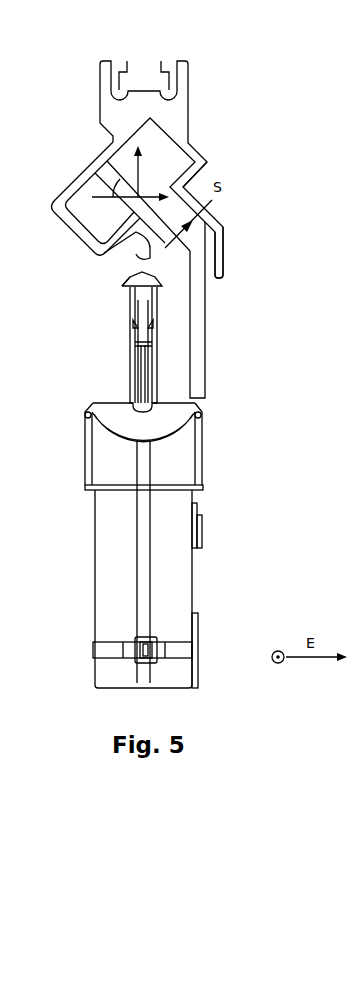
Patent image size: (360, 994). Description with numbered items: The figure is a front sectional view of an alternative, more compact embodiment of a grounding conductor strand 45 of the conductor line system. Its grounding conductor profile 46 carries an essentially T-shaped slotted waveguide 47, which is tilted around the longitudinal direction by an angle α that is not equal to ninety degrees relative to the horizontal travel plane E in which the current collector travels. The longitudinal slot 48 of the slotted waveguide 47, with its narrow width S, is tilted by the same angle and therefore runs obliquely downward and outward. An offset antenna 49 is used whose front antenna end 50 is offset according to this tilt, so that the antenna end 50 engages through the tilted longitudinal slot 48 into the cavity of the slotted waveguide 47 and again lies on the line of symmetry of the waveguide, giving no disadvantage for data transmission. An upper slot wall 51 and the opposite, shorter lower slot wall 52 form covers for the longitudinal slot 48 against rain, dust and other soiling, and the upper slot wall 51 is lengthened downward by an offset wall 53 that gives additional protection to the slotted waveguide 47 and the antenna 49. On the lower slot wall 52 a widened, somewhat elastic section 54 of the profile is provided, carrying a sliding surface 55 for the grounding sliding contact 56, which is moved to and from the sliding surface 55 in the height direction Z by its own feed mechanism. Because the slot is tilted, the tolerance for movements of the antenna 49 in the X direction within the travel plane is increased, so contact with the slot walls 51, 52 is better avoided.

The grounding conductor strand 45 is at (295, 148).
The grounding conductor profile 46 is at (56, 195).
The slotted waveguide 47 is at (168, 162).
The longitudinal slot 48 is at (204, 246).
The offset antenna 49 is at (205, 348).
The antenna end 50 is at (133, 205).
The upper slot wall 51 is at (213, 214).
The lower slot wall 52 is at (140, 253).
The offset wall 53 is at (219, 282).
The elastic section 54 is at (114, 295).
The sliding surface 55 is at (128, 290).
The grounding sliding contact 56 is at (130, 377).